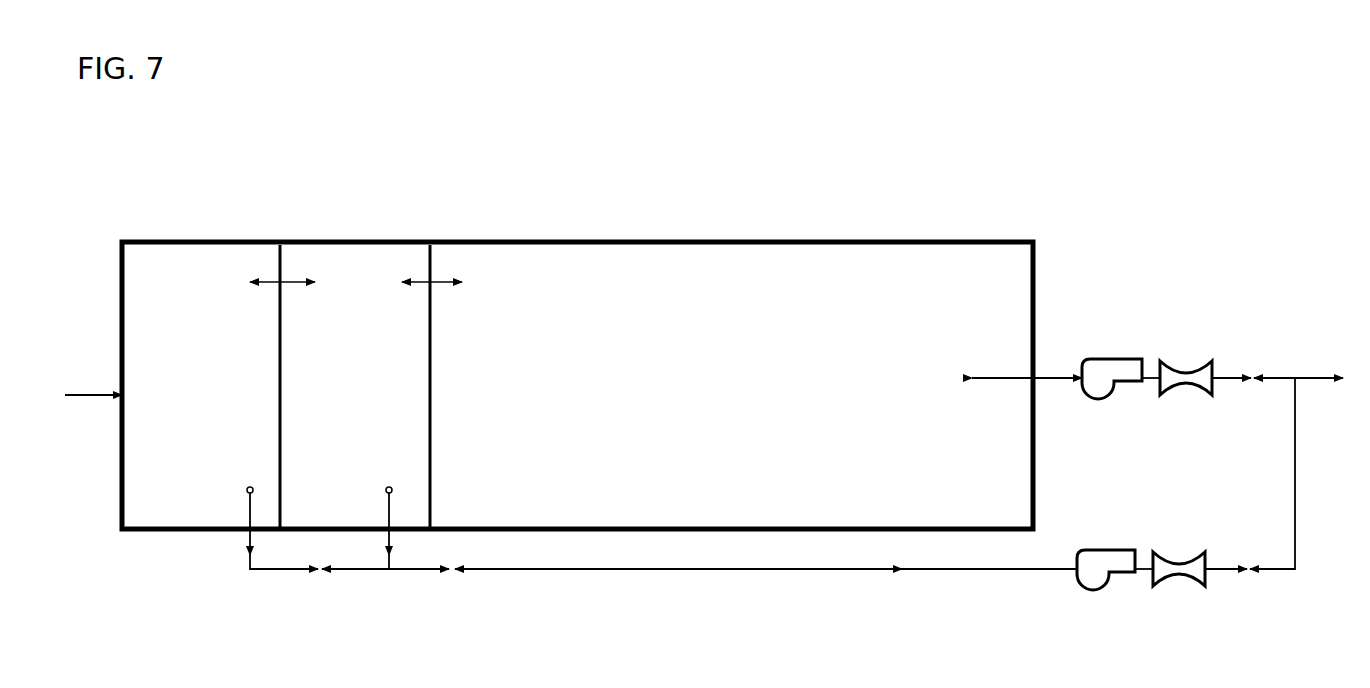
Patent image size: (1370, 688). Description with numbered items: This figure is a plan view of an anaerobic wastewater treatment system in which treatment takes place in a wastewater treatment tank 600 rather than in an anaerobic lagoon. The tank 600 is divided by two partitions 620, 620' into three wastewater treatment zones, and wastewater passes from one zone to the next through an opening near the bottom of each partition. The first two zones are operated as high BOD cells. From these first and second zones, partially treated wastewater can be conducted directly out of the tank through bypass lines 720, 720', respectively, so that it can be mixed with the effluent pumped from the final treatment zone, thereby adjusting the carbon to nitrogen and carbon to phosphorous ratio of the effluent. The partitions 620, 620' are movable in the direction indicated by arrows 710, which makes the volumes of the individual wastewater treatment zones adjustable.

The wastewater treatment tank 600 is at (905, 224).
The partition 620 is at (332, 386).
The partition 620' is at (486, 386).
The arrows 710 is at (425, 273).
The bypass line 720 is at (315, 511).
The bypass line 720' is at (427, 516).